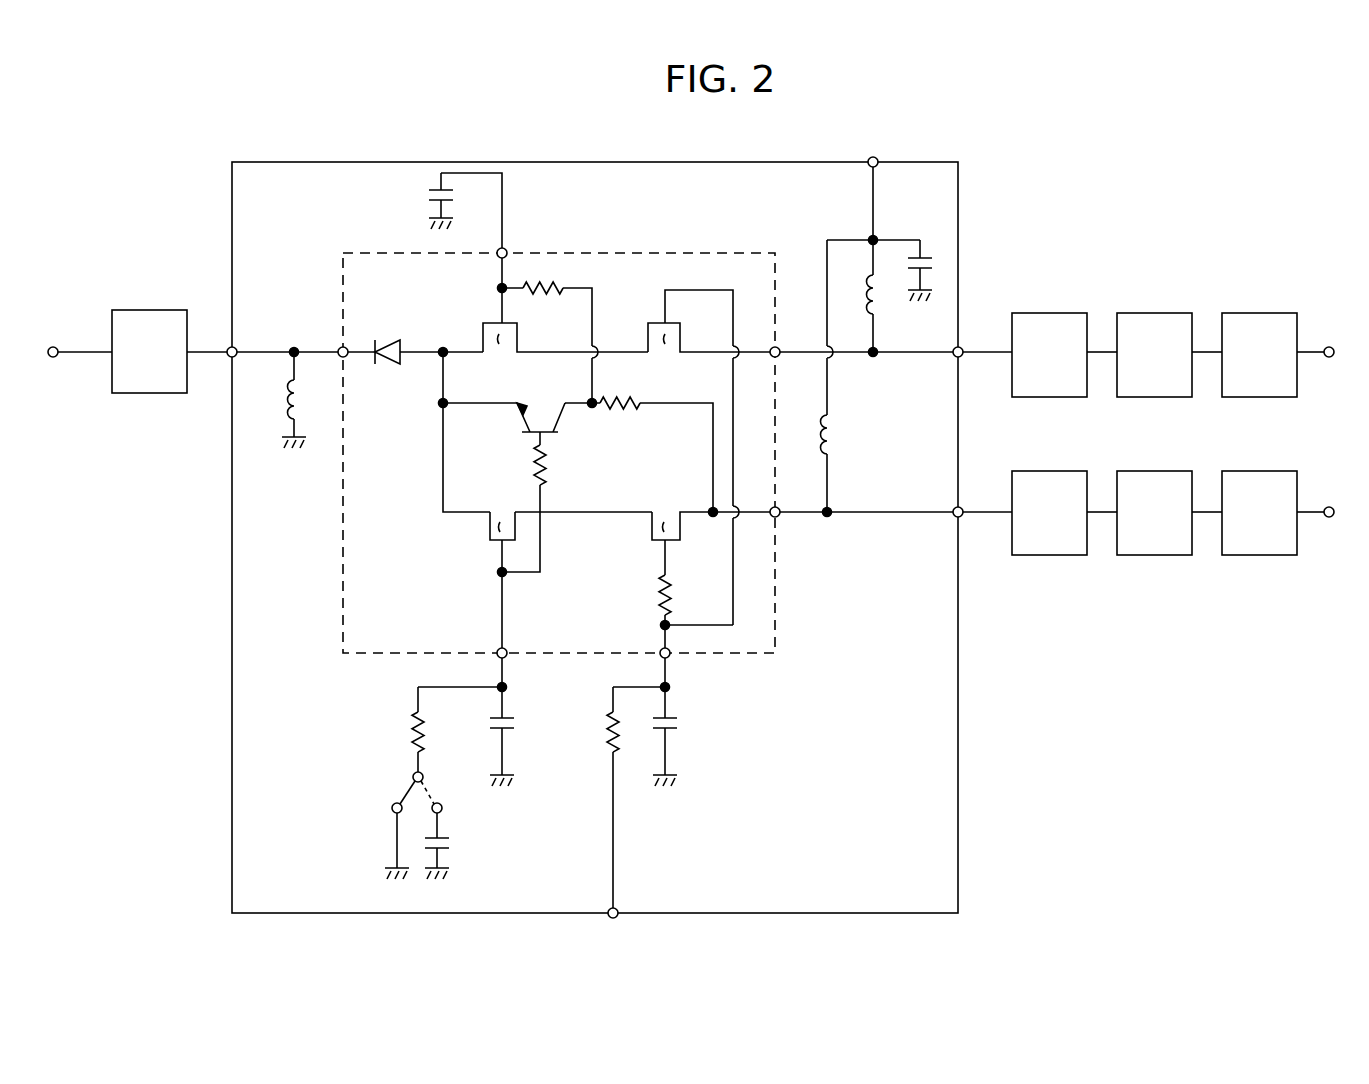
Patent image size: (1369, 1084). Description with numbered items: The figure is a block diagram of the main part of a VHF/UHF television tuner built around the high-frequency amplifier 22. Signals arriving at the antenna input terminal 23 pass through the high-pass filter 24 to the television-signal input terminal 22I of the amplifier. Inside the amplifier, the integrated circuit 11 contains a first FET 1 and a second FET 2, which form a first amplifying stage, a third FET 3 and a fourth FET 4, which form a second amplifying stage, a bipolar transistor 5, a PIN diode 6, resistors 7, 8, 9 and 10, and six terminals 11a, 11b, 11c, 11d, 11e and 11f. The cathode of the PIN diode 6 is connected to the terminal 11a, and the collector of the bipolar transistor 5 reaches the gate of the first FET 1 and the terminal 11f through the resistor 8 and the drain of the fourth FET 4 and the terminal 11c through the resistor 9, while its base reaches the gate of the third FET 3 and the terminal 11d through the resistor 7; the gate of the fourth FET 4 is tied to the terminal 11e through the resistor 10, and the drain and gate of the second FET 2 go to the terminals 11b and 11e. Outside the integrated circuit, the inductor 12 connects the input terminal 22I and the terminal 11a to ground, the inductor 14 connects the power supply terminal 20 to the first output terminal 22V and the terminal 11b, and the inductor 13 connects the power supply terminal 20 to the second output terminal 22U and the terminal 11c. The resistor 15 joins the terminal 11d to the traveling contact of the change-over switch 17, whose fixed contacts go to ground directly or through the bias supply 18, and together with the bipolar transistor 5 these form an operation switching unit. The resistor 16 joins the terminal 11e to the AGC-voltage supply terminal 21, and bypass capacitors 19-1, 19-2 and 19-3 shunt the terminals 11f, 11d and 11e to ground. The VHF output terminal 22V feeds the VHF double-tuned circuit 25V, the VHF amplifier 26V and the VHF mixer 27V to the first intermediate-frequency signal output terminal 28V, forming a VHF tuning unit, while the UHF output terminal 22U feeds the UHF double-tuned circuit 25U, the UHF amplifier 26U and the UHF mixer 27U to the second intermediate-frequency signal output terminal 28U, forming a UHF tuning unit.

The first FET 1 is at (502, 360).
The second FET 2 is at (666, 360).
The third FET 3 is at (502, 505).
The fourth FET 4 is at (664, 505).
The bipolar transistor 5 is at (544, 416).
The PIN diode 6 is at (400, 336).
The resistor 7 is at (550, 462).
The resistor 8 is at (566, 290).
The resistor 9 is at (626, 412).
The resistor 10 is at (652, 586).
The integrated circuit 11 is at (656, 253).
The terminal 11a is at (340, 348).
The terminal 11b is at (778, 348).
The terminal 11c is at (778, 518).
The terminal 11d is at (500, 650).
The terminal 11e is at (661, 650).
The terminal 11f is at (508, 252).
The inductor 12 is at (284, 398).
The inductor 13 is at (842, 436).
The inductor 14 is at (879, 314).
The resistor 15 is at (408, 734).
The resistor 16 is at (604, 735).
The change-over switch 17 is at (412, 778).
The bias supply 18 is at (442, 840).
The bypass capacitor 19-1 is at (428, 218).
The bypass capacitor 19-2 is at (512, 718).
The bypass capacitor 19-3 is at (676, 718).
The power supply terminal 20 is at (875, 160).
The AGC-voltage supply terminal 21 is at (618, 908).
The high-frequency amplifier 22 is at (409, 136).
The television-signal input terminal 22I is at (230, 357).
The first output terminal 22V is at (963, 346).
The second output terminal 22U is at (963, 508).
The antenna input terminal 23 is at (52, 347).
The high-pass filter 24 is at (149, 310).
The VHF double-tuned circuit 25V is at (1056, 312).
The VHF amplifier 26V is at (1161, 312).
The VHF mixer 27V is at (1266, 312).
The first intermediate-frequency signal output terminal 28V is at (1334, 347).
The UHF double-tuned circuit 25U is at (1056, 471).
The UHF amplifier 26U is at (1161, 471).
The UHF mixer 27U is at (1266, 471).
The second intermediate-frequency signal output terminal 28U is at (1334, 507).